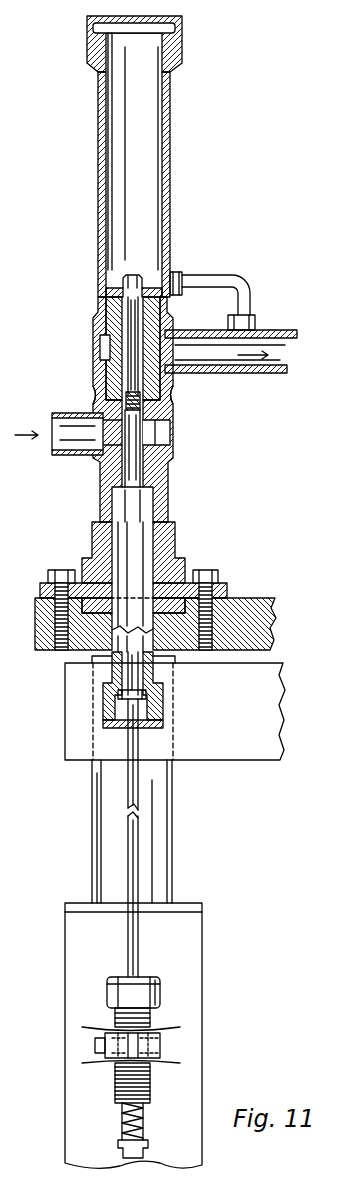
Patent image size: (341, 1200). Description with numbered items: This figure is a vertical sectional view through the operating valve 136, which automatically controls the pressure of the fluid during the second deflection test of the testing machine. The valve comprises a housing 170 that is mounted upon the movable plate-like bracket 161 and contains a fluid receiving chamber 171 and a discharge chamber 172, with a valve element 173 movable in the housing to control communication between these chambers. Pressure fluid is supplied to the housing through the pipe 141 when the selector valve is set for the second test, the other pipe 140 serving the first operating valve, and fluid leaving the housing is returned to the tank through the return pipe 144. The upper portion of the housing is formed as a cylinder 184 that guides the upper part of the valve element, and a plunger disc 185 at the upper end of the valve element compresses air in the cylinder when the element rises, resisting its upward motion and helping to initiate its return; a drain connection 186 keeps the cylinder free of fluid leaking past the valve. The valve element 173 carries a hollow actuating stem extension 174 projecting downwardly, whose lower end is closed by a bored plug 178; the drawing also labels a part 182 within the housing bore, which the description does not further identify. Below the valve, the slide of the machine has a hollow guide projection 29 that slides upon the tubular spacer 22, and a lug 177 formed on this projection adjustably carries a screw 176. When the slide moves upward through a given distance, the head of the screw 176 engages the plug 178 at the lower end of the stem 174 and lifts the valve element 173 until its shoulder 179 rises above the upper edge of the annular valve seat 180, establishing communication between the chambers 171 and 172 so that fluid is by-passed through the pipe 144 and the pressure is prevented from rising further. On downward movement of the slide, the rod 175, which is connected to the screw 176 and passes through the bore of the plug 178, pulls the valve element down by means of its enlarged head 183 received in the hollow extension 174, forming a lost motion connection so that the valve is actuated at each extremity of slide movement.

The cylinder 184 is at (170, 118).
The operating valve 136 is at (170, 204).
The plunger disc 185 is at (118, 292).
The drain connection 186 is at (178, 277).
The return pipe 144 is at (278, 330).
The housing 170 is at (93, 331).
The discharge chamber 172 is at (100, 349).
The valve element 173 is at (110, 366).
The pipe 141 is at (70, 413).
The fluid receiving chamber 171 is at (163, 432).
The annular valve seat 180 is at (160, 376).
The shoulder 179 is at (173, 396).
The valve stem 182 is at (137, 557).
The plate-like bracket 161 is at (225, 605).
The bored plug 178 is at (163, 727).
The hollow actuating stem extension 174 is at (145, 673).
The enlarged head 183 is at (117, 695).
The rod 175 is at (140, 846).
The spacer 22 is at (97, 820).
The hollow guide projection 29 is at (192, 955).
The screw 176 is at (160, 996).
The lug 177 is at (160, 1050).
The pipe 140 is at (326, 470).